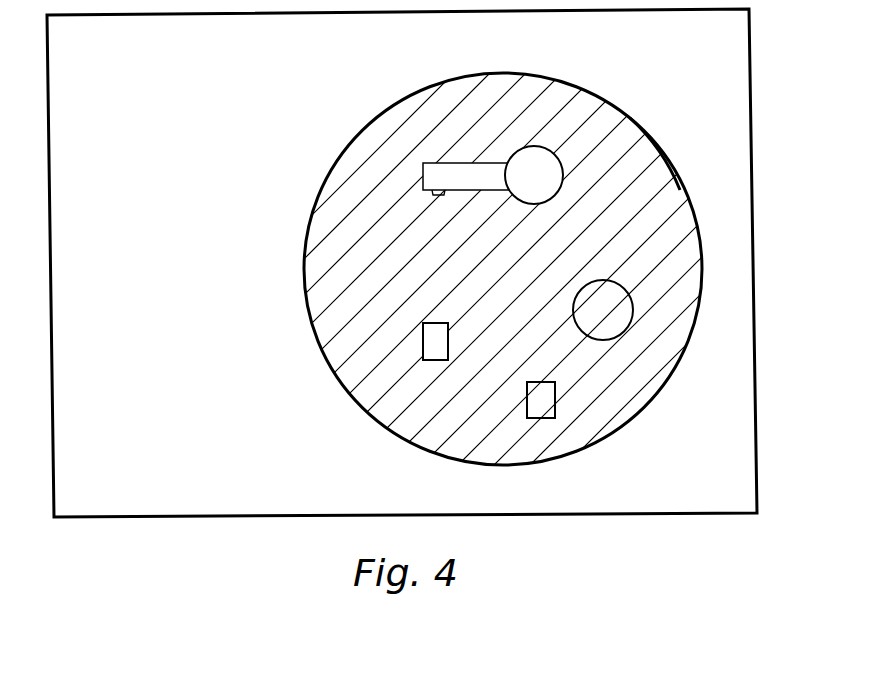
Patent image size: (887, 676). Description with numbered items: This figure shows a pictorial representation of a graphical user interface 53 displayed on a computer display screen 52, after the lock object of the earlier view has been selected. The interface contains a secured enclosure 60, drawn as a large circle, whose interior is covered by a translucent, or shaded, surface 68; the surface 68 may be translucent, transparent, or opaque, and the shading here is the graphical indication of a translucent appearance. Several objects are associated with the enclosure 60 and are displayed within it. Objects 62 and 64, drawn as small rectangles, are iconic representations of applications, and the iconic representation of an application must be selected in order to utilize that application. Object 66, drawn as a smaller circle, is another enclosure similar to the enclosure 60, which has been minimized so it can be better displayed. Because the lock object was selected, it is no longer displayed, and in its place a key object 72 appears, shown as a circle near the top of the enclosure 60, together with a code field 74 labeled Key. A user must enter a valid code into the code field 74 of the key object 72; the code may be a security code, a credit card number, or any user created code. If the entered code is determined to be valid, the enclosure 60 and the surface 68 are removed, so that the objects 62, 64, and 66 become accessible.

The computer display screen 52 is at (750, 77).
The graphical user interface 53 is at (133, 87).
The secured enclosure 60 is at (625, 115).
The object 62 is at (430, 360).
The object 64 is at (543, 418).
The object 66 is at (622, 335).
The surface 68 is at (675, 185).
The key object 72 is at (543, 163).
The code field 74 is at (480, 173).